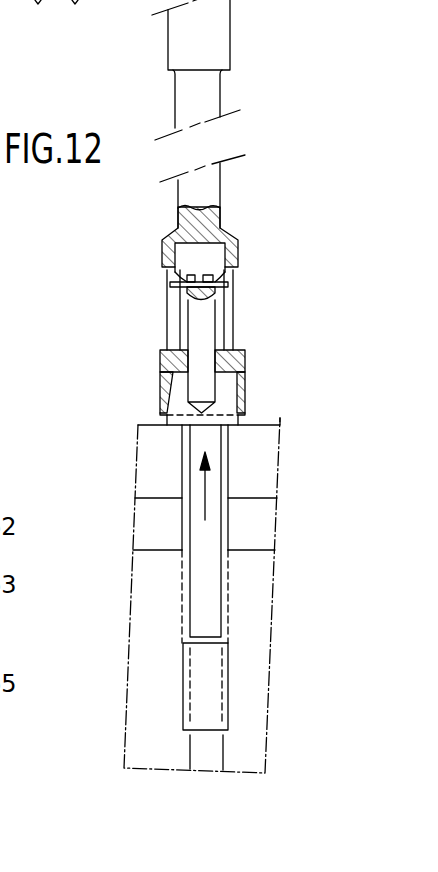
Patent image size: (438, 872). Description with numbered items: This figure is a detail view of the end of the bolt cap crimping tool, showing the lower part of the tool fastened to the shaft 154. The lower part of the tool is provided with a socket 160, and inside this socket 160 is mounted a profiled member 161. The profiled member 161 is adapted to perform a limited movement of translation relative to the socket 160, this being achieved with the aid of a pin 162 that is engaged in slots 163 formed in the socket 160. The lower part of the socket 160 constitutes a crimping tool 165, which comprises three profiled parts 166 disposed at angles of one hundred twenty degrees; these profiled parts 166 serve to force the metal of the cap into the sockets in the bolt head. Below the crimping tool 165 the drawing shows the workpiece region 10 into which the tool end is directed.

The shaft 154 is at (205, 49).
The socket 160 is at (237, 244).
The pin 162 is at (163, 249).
The slots 163 is at (167, 329).
The profiled member 161 is at (203, 328).
The crimping tool 165 is at (243, 366).
The profiled parts 166 is at (160, 370).
The body 10 is at (210, 480).